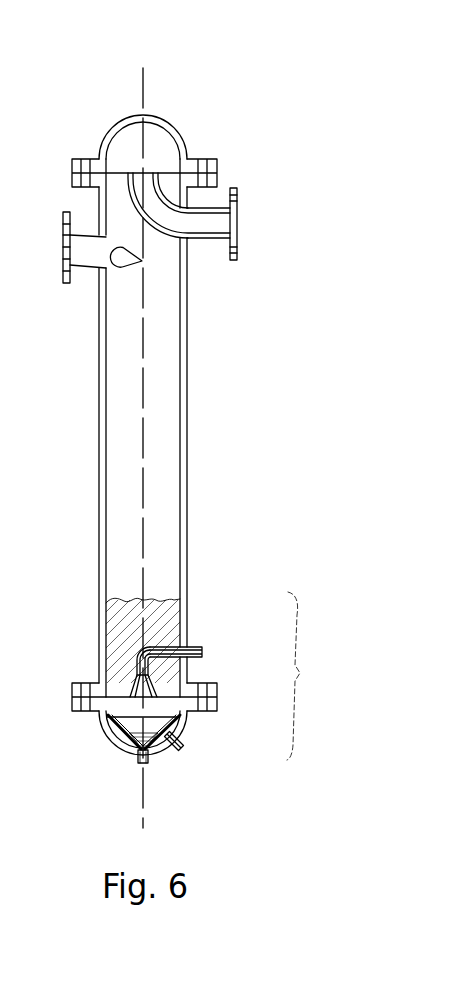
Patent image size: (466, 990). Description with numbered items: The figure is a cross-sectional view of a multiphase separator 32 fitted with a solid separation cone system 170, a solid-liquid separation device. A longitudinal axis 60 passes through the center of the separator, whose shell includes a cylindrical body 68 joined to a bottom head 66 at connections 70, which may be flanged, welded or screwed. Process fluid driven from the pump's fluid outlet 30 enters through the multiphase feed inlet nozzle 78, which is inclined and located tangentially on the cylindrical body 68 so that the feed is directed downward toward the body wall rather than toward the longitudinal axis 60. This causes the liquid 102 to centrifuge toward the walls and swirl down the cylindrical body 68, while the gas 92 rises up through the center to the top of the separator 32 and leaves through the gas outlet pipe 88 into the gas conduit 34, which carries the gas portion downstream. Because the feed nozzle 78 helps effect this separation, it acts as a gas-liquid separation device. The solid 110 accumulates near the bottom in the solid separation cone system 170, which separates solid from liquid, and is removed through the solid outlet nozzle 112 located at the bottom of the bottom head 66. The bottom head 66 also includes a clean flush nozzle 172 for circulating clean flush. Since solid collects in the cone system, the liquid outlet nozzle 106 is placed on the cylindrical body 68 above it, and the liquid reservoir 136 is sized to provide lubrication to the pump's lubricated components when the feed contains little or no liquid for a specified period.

The multiphase separator 32 is at (195, 62).
The longitudinal axis 60 is at (142, 78).
The gas 92 is at (118, 152).
The connections 70 is at (193, 168).
The cylindrical body 68 is at (100, 200).
The gas conduit 34 is at (208, 240).
The gas outlet pipe 88 is at (160, 238).
The fluid outlet 30 is at (87, 268).
The multiphase feed inlet nozzle 78 is at (127, 265).
The liquid 102 is at (117, 635).
The liquid outlet nozzle 106 is at (193, 647).
The solid 110 is at (137, 745).
The bottom head 66 is at (102, 732).
The solid separation cone system 170 is at (202, 731).
The clean flush nozzle 172 is at (178, 747).
The solid outlet nozzle 112 is at (148, 758).
The liquid reservoir 136 is at (316, 676).